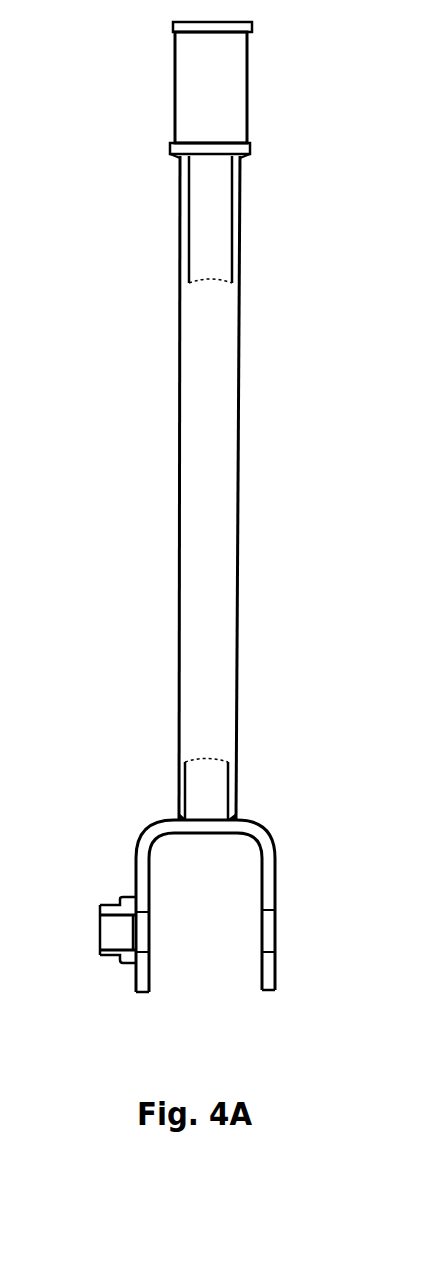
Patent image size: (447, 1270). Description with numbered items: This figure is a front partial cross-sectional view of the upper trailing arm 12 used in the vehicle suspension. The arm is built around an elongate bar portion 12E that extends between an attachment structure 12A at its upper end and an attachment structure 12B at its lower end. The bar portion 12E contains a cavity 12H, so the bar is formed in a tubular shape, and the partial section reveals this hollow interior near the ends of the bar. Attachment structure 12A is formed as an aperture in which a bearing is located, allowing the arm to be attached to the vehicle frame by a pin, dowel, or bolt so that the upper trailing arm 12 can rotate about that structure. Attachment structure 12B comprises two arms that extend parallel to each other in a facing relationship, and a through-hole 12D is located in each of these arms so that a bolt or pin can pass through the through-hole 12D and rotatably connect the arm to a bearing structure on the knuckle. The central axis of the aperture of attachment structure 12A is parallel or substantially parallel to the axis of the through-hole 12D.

The upper trailing arm 12 is at (290, 320).
The attachment structure 12A is at (222, 105).
The attachment structure 12B is at (276, 884).
The through-hole 12D is at (113, 937).
The elongate bar portion 12E is at (203, 505).
The cavity 12H is at (205, 800).